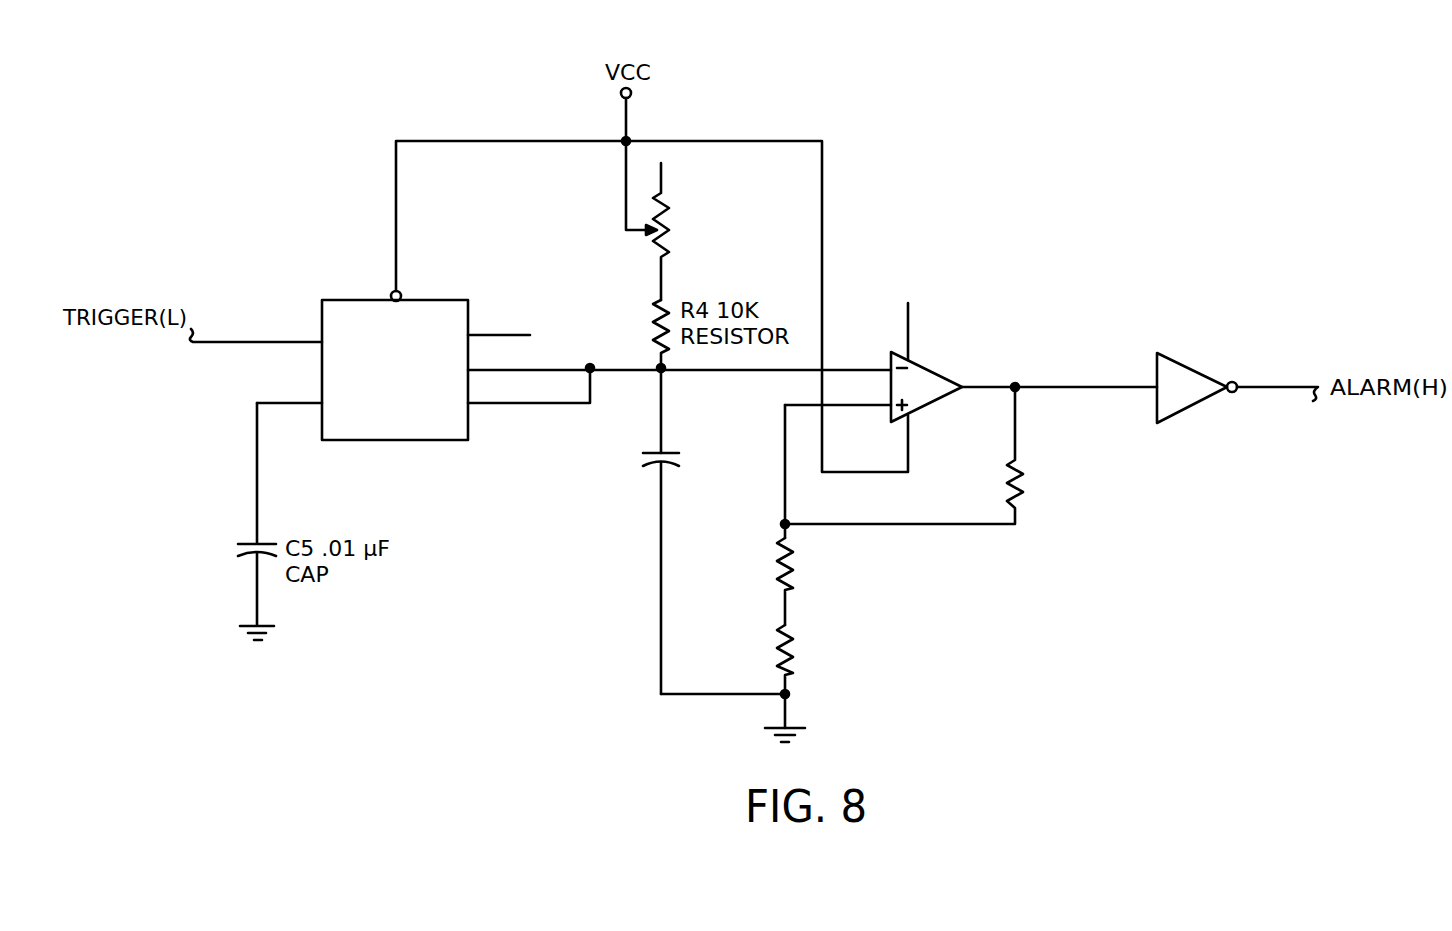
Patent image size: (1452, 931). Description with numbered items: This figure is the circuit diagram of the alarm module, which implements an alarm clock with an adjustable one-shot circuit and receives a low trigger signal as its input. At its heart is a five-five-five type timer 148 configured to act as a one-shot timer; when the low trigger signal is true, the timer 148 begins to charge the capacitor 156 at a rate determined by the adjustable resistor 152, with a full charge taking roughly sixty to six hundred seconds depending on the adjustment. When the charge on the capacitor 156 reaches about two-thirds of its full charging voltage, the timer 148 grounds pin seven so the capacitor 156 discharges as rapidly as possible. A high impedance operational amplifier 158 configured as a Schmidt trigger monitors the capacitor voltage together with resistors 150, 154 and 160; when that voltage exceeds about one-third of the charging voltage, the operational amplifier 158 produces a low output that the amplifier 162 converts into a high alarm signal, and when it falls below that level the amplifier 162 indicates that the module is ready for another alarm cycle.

The 555 timer 148 is at (350, 298).
The resistor R2 1M 150 is at (783, 570).
The adjustable resistor 152 is at (673, 197).
The resistor R3 1M 154 is at (782, 655).
The capacitor 156 is at (673, 450).
The operational amplifier 158 is at (926, 366).
The resistor R1 1M 160 is at (1020, 460).
The amplifier 162 is at (1200, 365).